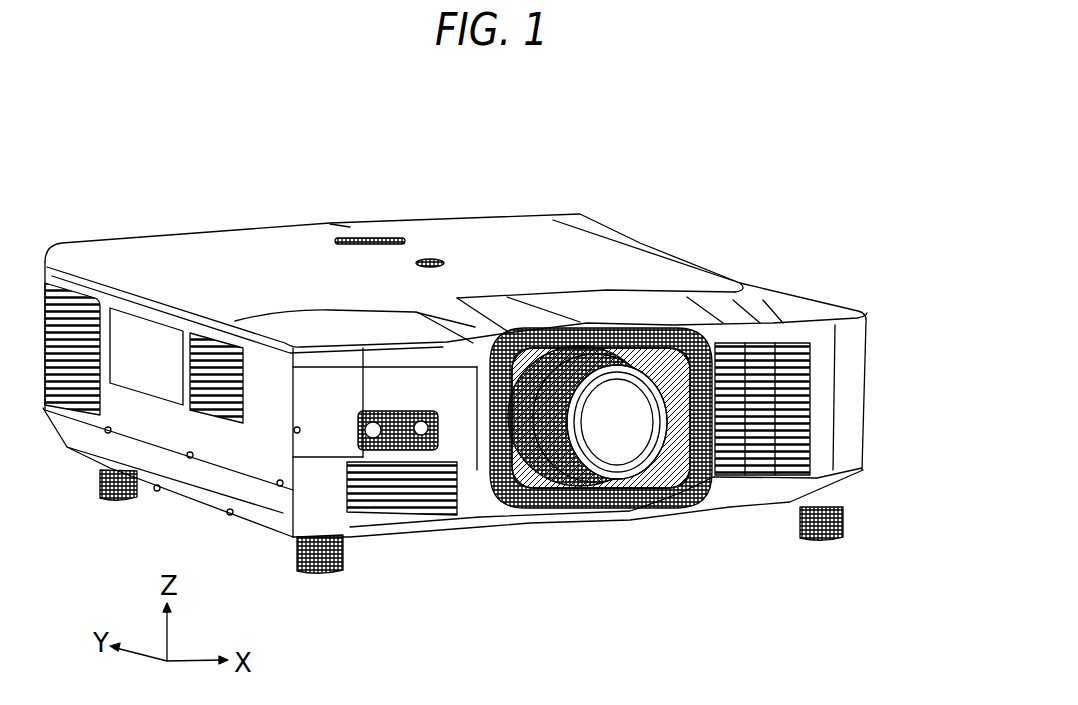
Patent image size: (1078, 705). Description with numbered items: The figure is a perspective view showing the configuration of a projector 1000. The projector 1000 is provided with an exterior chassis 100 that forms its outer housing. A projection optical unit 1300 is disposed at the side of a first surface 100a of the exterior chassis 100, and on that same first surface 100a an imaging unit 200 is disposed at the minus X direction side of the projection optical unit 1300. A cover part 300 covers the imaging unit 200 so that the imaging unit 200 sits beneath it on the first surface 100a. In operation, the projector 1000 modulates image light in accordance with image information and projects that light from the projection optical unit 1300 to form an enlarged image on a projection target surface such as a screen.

The projector 1000 is at (850, 130).
The exterior chassis 100 is at (477, 217).
The first surface 100a is at (830, 403).
The imaging unit 200 is at (397, 430).
The cover part 300 is at (462, 428).
The projection optical unit 1300 is at (605, 432).